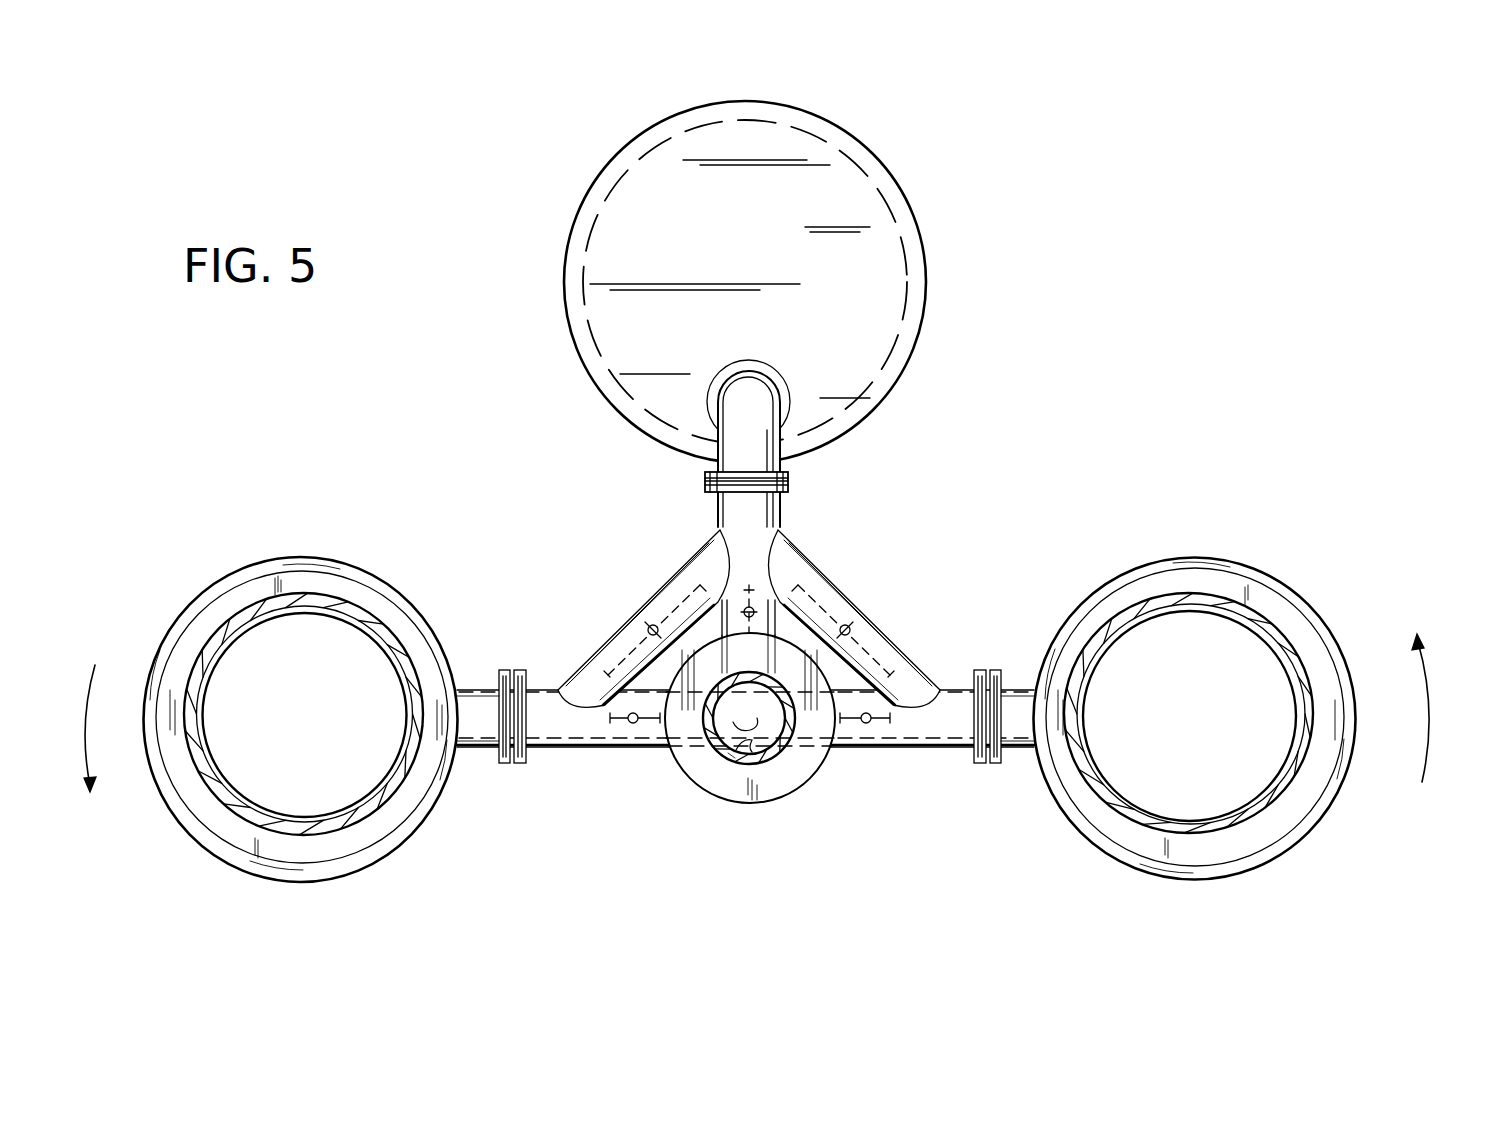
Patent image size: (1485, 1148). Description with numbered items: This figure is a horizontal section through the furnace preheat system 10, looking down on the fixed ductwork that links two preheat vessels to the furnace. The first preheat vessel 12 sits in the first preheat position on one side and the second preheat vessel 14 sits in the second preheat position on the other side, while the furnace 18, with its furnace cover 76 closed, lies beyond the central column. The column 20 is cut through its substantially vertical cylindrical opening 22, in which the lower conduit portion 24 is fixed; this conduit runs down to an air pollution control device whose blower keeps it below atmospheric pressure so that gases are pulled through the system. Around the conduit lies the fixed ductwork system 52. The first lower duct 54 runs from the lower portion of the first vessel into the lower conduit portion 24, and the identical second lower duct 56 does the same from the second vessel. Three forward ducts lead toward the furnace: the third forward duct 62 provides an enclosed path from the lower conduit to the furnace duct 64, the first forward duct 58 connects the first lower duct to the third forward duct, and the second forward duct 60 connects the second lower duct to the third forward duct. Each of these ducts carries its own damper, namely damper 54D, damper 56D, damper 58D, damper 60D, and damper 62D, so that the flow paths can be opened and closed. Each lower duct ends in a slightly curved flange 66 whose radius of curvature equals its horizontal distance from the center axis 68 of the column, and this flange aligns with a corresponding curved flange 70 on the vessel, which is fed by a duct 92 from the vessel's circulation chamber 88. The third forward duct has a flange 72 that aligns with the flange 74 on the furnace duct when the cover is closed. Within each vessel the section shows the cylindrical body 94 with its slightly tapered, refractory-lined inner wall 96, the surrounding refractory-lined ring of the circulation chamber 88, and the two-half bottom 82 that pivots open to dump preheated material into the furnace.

The furnace preheat system 10 is at (422, 414).
The first preheat vessel 12 is at (1243, 567).
The second preheat vessel 14 is at (749, 717).
The furnace 18 is at (766, 282).
The column 20 is at (750, 754).
The central vertical opening 22 is at (728, 753).
The lower conduit portion 24 is at (750, 720).
The fixed ductwork system 52 is at (944, 498).
The first lower duct 54 is at (892, 705).
The damper 54D is at (863, 727).
The second lower duct 56 is at (603, 716).
The damper 56D is at (625, 730).
The first forward duct 58 is at (854, 618).
The damper 58D is at (843, 600).
The second forward duct 60 is at (640, 616).
The damper 60D is at (683, 570).
The third forward duct 62 is at (792, 543).
The damper 62D is at (758, 592).
The furnace duct 64 is at (773, 430).
The flange 66 is at (520, 763).
The center axis 68 is at (760, 732).
The curved flange 70 is at (503, 767).
The flange 72 is at (705, 488).
The flange 74 is at (717, 477).
The furnace cover 76 is at (682, 211).
The bottom 82 is at (262, 702).
The circulation chamber 88 is at (405, 825).
The duct 92 is at (483, 690).
The cylindrical body 94 is at (420, 690).
The inner wall 96 is at (368, 625).